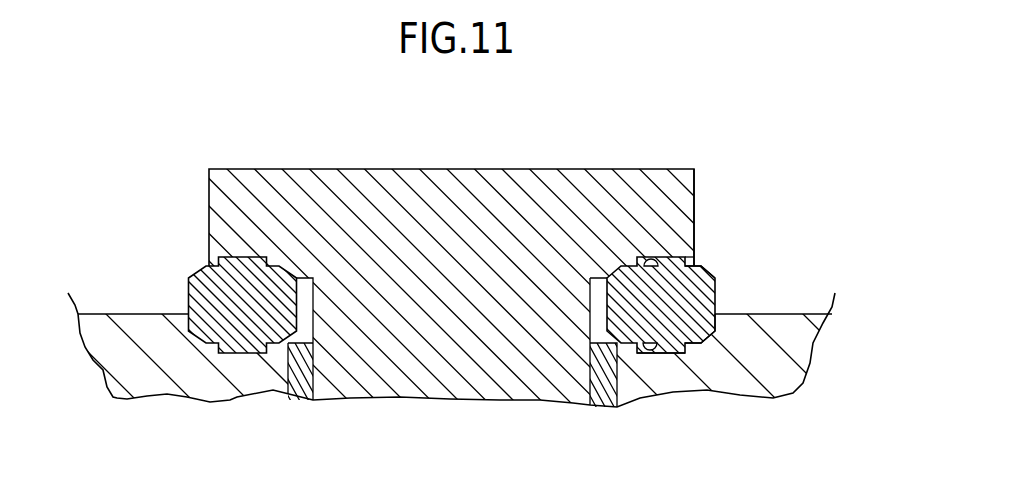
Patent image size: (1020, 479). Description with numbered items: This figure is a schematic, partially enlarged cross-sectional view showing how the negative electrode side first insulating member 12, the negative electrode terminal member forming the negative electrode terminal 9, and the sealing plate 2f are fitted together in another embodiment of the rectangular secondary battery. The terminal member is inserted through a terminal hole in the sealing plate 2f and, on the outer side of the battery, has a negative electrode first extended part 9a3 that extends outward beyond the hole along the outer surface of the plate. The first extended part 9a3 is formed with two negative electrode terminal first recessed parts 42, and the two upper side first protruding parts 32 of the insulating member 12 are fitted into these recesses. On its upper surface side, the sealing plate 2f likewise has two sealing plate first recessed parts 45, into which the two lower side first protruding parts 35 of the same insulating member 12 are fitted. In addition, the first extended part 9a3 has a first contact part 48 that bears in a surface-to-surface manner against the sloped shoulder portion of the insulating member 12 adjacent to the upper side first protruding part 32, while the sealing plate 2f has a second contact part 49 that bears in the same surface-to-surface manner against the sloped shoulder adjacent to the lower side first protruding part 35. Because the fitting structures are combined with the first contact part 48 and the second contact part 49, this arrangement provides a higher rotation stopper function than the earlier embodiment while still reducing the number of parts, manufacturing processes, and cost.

The negative electrode terminal 9 is at (462, 176).
The negative electrode first extended part 9a3 is at (662, 177).
The sealing plate 2f is at (803, 357).
The negative electrode side first insulating member 12 is at (712, 302).
The upper side first protruding part 32 is at (703, 263).
The negative electrode terminal first recessed part 42 is at (650, 262).
The sealing plate first recessed part 45 is at (647, 354).
The lower side first protruding part 35 is at (670, 354).
The first contact part 48 is at (612, 268).
The second contact part 49 is at (703, 343).